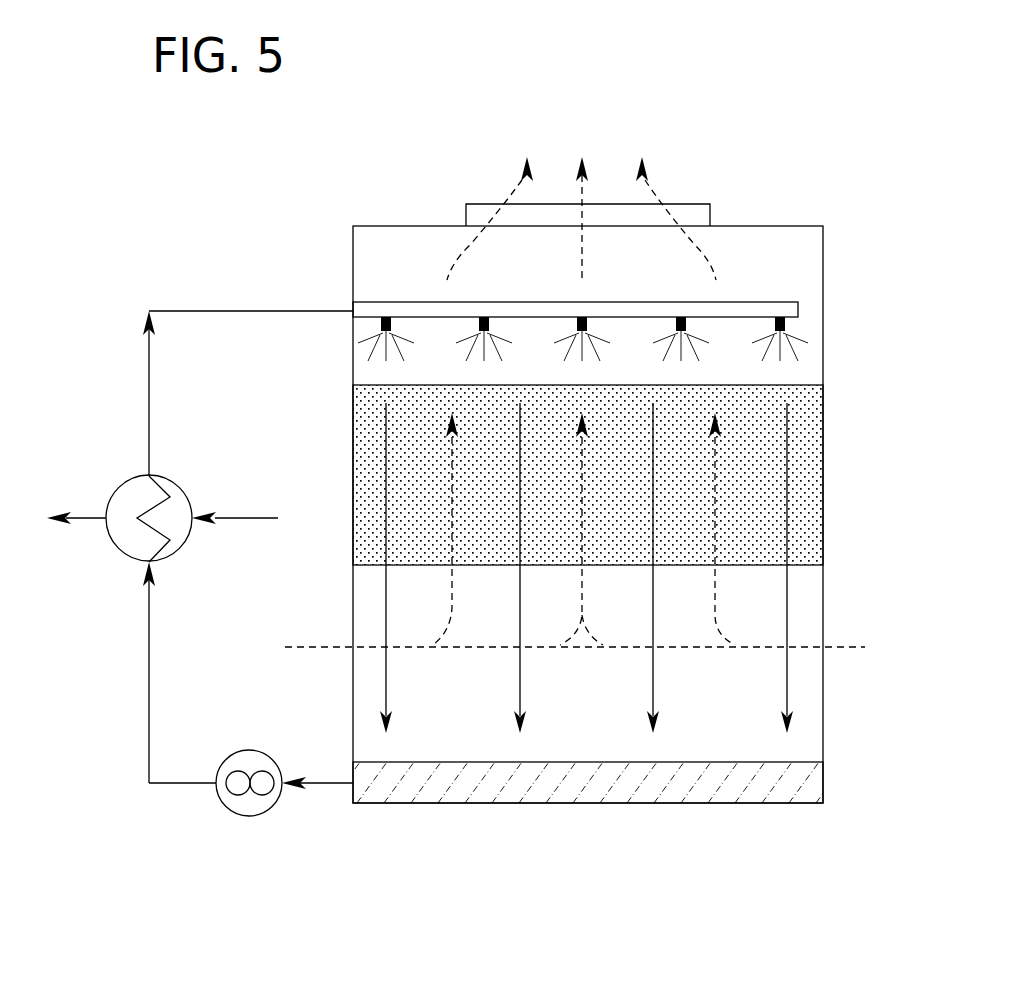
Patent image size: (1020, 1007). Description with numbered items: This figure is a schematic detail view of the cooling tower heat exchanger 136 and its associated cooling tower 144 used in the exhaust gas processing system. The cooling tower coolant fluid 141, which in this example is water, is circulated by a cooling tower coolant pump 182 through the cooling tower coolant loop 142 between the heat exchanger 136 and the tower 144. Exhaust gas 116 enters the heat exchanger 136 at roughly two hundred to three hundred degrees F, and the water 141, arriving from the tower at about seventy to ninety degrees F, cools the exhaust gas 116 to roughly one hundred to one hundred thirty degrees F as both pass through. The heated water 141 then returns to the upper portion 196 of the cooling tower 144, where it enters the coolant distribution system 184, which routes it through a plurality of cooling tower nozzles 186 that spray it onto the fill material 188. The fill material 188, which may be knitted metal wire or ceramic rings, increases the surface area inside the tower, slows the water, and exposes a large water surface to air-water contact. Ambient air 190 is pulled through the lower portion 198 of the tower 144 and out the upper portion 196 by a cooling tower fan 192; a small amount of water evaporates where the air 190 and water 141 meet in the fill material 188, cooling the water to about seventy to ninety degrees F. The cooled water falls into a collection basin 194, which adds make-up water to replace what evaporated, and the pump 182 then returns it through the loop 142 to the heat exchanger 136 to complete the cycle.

The exhaust gas 116 is at (230, 518).
The cooling tower heat exchanger 136 is at (119, 488).
The cooling tower coolant fluid 141 is at (802, 340).
The cooling tower coolant loop 142 is at (230, 310).
The cooling tower 144 is at (566, 832).
The cooling tower coolant pump 182 is at (242, 817).
The coolant distribution system 184 is at (775, 302).
The cooling tower nozzles 186 is at (480, 317).
The fill material 188 is at (807, 476).
The ambient air 190 is at (503, 212).
The cooling tower fan 192 is at (688, 204).
The collection basin 194 is at (832, 762).
The upper portion 196 is at (893, 222).
The lower portion 198 is at (893, 565).